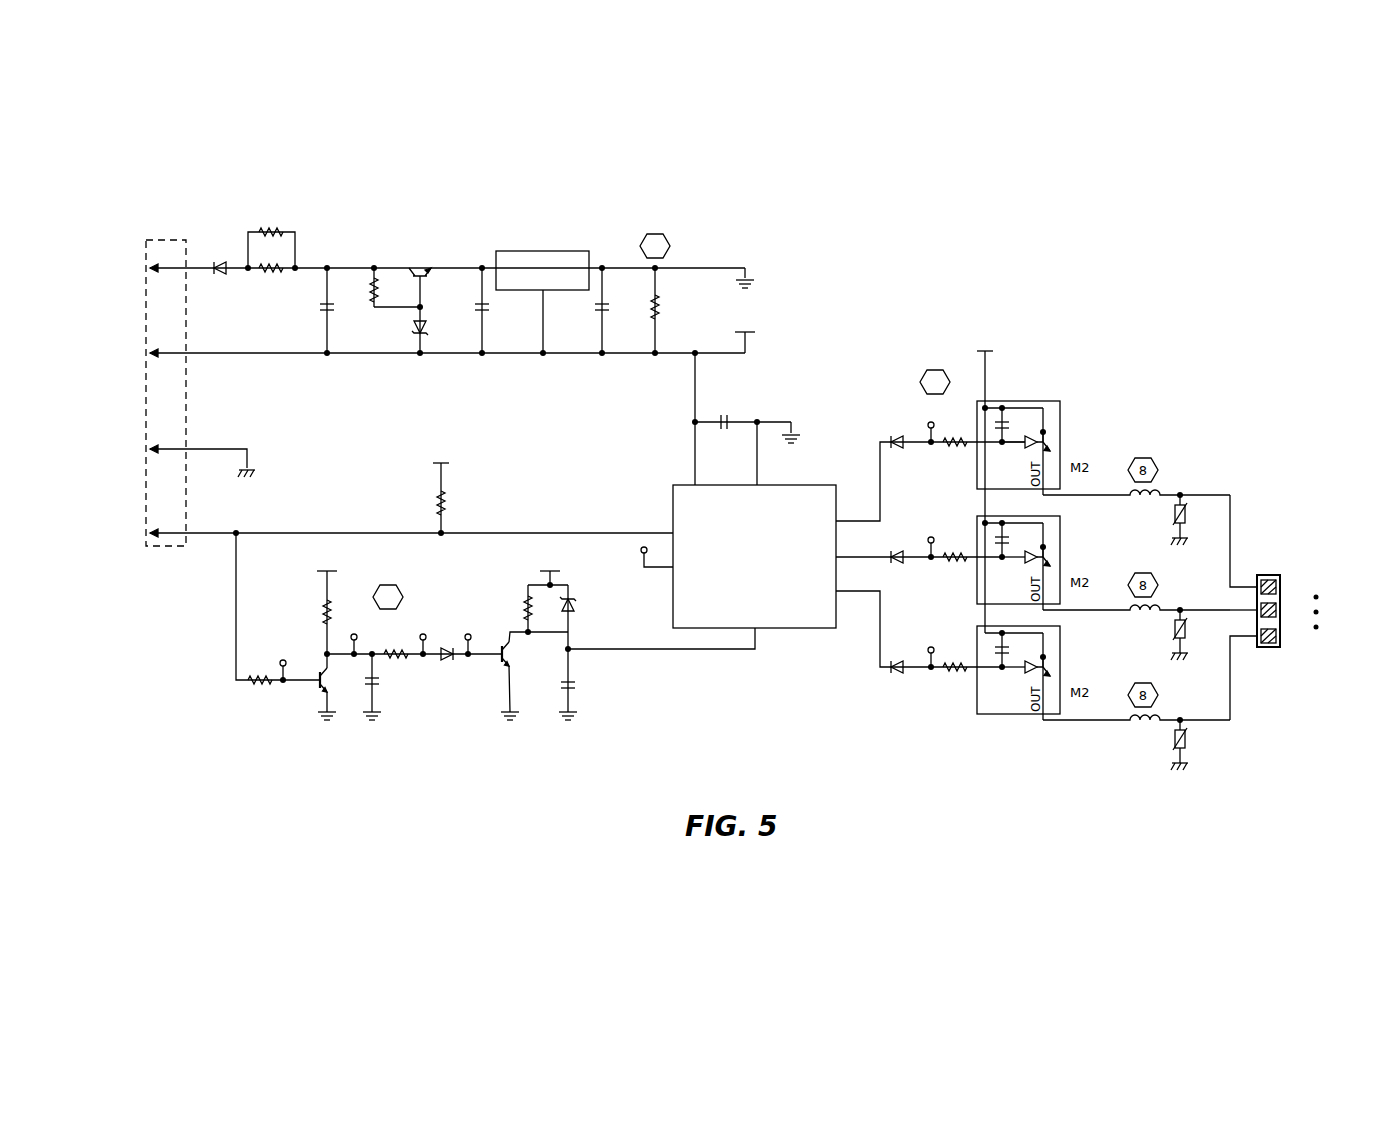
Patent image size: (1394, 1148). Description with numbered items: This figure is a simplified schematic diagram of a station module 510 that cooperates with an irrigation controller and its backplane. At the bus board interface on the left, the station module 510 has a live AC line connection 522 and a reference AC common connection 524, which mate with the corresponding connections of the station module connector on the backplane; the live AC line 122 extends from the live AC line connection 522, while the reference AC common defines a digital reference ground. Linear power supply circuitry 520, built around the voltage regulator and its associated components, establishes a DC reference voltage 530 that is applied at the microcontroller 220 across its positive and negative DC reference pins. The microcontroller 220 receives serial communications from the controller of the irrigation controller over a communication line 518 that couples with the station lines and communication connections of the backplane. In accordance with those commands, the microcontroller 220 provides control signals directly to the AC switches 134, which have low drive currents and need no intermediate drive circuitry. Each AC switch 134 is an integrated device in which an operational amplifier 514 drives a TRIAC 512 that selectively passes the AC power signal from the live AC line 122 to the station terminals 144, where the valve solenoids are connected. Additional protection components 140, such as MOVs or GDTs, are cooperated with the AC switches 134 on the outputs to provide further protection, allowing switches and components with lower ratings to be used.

The station module 510 is at (1130, 243).
The linear power supply circuitry 520 is at (602, 195).
The live AC line connection 522 is at (151, 349).
The reference AC common connection 524 is at (151, 264).
The live AC line 122 is at (224, 357).
The DC reference voltage 530 is at (707, 456).
The communication line 518 is at (598, 532).
The microcontroller 220 is at (790, 630).
The AC switches 134 is at (1074, 558).
The TRIAC 512 is at (1050, 448).
The operational amplifier 514 is at (1026, 449).
The additional protection components 140 is at (1188, 521).
The station terminals 144 is at (1268, 578).